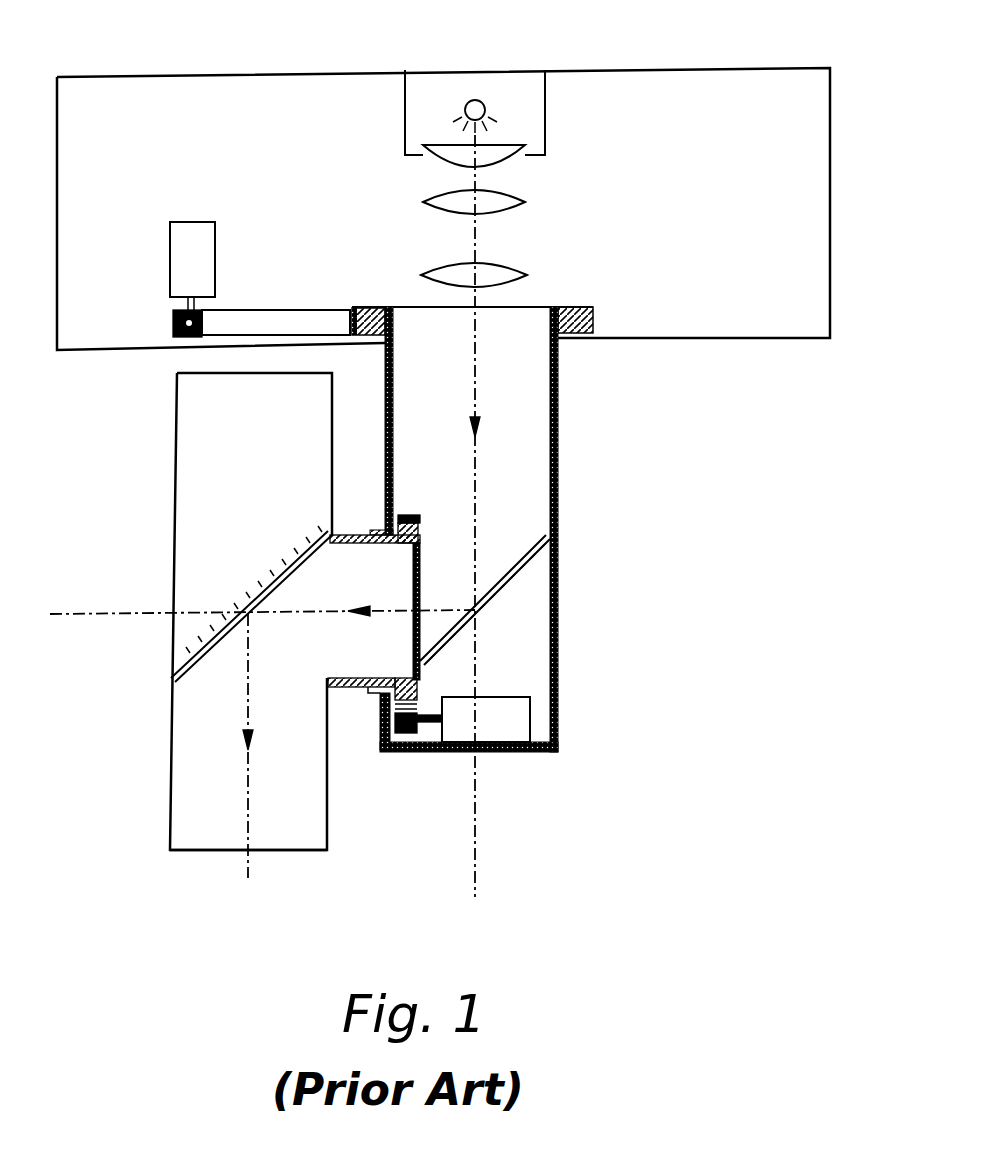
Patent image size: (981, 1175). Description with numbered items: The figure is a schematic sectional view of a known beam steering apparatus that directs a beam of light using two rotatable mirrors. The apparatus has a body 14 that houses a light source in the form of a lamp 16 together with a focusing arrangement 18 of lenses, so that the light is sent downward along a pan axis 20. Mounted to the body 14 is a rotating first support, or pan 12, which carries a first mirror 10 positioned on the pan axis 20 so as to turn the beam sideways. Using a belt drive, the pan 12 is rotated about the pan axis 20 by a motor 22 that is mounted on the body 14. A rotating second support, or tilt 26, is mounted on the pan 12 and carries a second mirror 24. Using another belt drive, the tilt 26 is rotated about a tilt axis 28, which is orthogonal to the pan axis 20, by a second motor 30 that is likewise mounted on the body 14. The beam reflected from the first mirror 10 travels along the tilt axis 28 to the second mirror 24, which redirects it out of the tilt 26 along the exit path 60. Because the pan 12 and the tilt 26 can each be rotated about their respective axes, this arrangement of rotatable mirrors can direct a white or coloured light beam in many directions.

The first mirror 10 is at (522, 568).
The pan 12 is at (560, 452).
The apparatus body 14 is at (832, 212).
The lamp 16 is at (480, 98).
The focusing arrangement 18 is at (510, 212).
The pan axis 20 is at (470, 878).
The motor 22 is at (186, 222).
The second mirror 24 is at (183, 685).
The tilt 26 is at (177, 487).
The tilt axis 28 is at (97, 618).
The motor 30 is at (500, 742).
The exit light path 60 is at (207, 853).